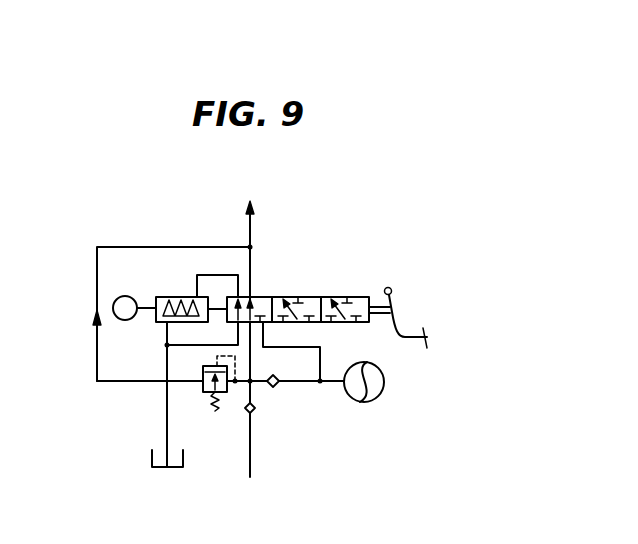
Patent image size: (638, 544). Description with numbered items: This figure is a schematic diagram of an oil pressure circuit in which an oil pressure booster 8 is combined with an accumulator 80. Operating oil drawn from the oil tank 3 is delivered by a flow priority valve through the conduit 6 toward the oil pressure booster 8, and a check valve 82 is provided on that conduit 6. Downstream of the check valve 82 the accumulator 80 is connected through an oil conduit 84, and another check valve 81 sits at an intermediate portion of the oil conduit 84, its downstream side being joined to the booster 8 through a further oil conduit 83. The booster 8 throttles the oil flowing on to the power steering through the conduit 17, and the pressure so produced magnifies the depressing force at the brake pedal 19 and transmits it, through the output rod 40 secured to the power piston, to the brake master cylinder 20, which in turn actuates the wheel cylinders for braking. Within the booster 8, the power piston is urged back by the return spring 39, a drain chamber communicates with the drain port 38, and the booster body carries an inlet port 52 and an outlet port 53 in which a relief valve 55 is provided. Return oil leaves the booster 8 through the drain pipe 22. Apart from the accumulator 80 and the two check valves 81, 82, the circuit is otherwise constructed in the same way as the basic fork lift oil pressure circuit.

The oil tank 3 is at (152, 462).
The conduit 6 is at (252, 460).
The oil pressure booster 8 is at (318, 297).
The conduit 17 is at (252, 222).
The brake pedal 19 is at (427, 333).
The brake master cylinder 20 is at (125, 296).
The drain pipe 22 is at (166, 416).
The drain port 38 is at (230, 322).
The return spring 39 is at (175, 297).
The output rod 40 is at (142, 318).
The inlet port 52 is at (252, 324).
The outlet port 53 is at (253, 296).
The relief valve 55 is at (200, 394).
The accumulator 80 is at (380, 395).
The check valve 81 is at (277, 386).
The check valve 82 is at (254, 412).
The oil conduit 83 is at (316, 346).
The oil conduit 84 is at (308, 383).